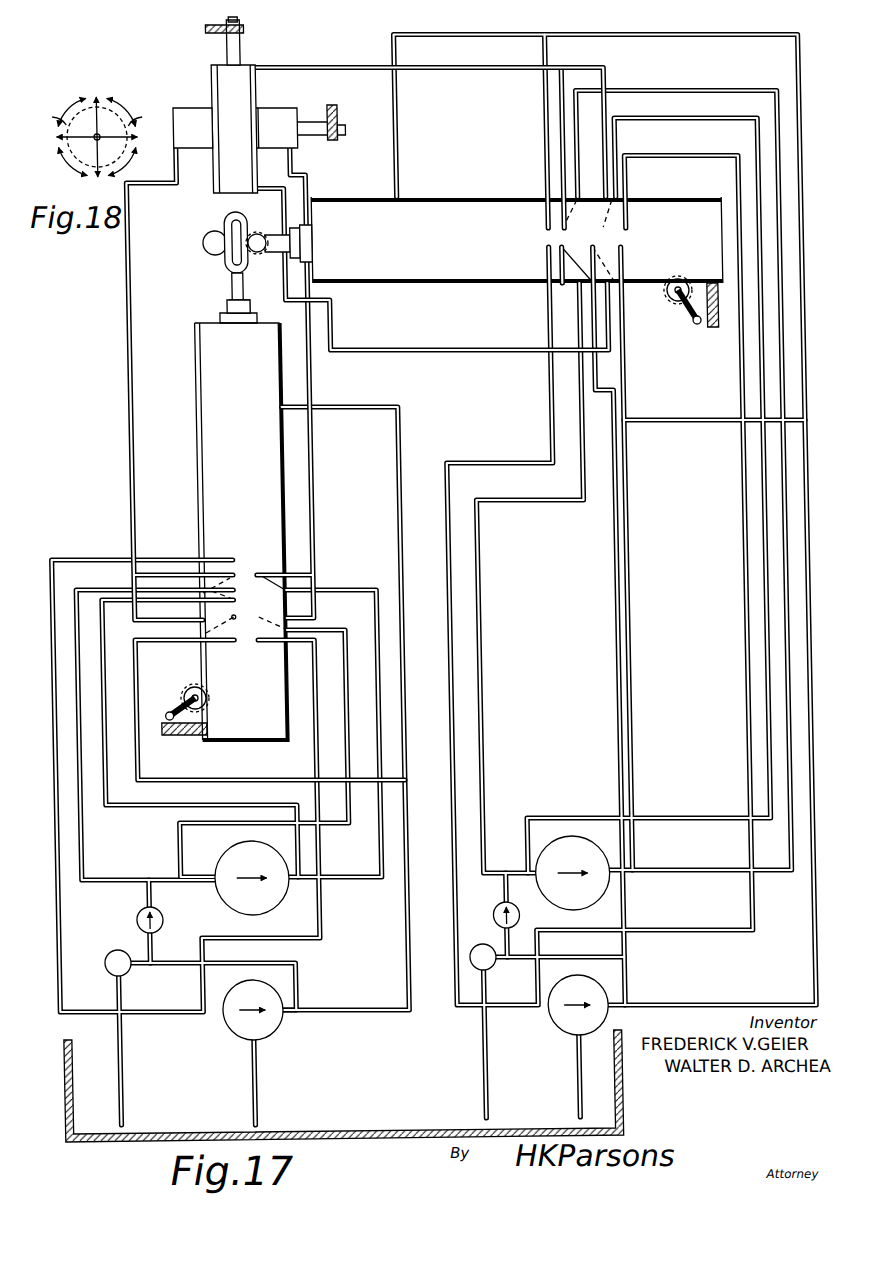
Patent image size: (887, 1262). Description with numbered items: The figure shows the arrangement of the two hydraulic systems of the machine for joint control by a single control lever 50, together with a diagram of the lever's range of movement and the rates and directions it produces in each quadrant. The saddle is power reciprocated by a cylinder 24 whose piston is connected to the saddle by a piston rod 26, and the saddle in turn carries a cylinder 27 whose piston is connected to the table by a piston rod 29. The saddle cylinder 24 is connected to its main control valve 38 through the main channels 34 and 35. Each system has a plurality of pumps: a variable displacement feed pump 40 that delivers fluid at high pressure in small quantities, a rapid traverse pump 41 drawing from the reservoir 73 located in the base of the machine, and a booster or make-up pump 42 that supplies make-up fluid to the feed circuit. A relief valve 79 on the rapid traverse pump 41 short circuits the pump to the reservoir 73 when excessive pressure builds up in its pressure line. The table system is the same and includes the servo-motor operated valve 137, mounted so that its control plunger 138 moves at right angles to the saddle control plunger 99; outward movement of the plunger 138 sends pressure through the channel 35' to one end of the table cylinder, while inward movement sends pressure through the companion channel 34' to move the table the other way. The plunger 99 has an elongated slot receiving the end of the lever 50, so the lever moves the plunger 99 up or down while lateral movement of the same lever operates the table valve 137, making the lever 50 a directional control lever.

In FIG. 17, the cylinder 24 is at (195, 118).
In FIG. 17, the piston rod 26 is at (316, 122).
In FIG. 17, the cylinder 27 is at (238, 78).
In FIG. 17, the piston rod 29 is at (251, 47).
In FIG. 17, the main channel 34 is at (241, 464).
In FIG. 17, the pipe from control valve to cross-feed cylinder 34' is at (434, 284).
In FIG. 17, the main channel 35 is at (307, 383).
In FIG. 17, the channel 35' is at (430, 117).
In FIG. 17, the main control valve 38 is at (208, 422).
In FIG. 17, the variable displacement feed pump 40 is at (218, 890).
In FIG. 17, the rapid traverse pump 41 is at (270, 1020).
In FIG. 17, the booster or make-up pump 42 is at (132, 916).
In FIG. 18, the control lever 50 is at (122, 141).
In FIG. 17, the control lever 50 is at (233, 235).
In FIG. 17, the reservoir 73 is at (100, 1146).
In FIG. 17, the relief valve 79 is at (106, 952).
In FIG. 17, the valve plunger 99 is at (238, 290).
In FIG. 17, the control valve 137 is at (476, 215).
In FIG. 17, the control plunger 138 is at (268, 255).